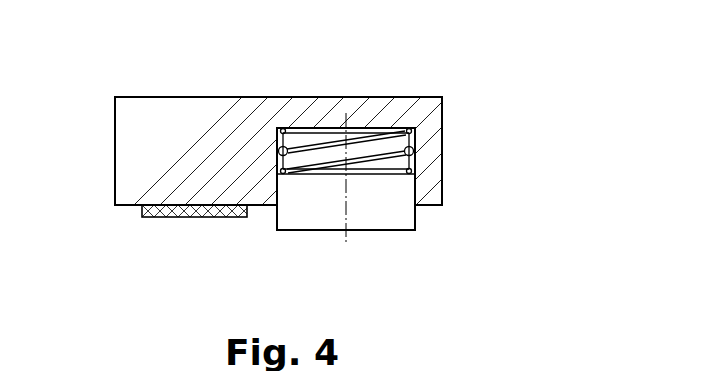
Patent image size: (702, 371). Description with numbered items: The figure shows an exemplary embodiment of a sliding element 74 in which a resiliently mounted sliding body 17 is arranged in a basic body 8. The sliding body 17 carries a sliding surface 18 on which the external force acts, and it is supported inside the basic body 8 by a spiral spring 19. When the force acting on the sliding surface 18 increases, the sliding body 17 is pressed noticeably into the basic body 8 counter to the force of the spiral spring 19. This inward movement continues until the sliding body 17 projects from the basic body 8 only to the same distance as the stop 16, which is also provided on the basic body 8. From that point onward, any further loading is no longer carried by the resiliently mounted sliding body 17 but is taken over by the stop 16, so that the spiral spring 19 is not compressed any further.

The sliding element 74 is at (493, 90).
The basic body 8 is at (122, 133).
The stop 16 is at (167, 210).
The sliding body 17 is at (382, 217).
The sliding surface 18 is at (327, 232).
The spiral spring 19 is at (413, 153).